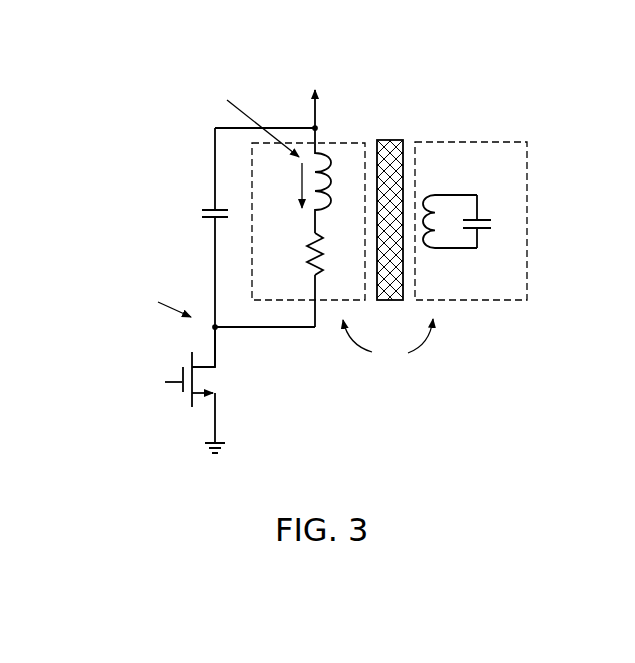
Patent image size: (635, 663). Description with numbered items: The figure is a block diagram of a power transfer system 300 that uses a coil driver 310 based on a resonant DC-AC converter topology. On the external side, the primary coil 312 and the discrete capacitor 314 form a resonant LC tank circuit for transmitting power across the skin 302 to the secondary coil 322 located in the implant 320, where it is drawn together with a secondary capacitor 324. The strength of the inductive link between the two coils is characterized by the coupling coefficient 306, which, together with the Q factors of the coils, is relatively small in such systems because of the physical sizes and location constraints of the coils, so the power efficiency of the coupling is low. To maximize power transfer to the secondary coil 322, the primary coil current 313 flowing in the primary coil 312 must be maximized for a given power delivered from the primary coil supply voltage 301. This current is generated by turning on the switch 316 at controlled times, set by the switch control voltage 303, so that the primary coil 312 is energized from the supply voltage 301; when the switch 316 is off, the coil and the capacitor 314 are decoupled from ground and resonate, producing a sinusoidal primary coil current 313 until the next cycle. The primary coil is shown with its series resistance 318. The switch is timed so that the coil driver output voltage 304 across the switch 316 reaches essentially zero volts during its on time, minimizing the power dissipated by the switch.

The power transfer system 300 is at (525, 89).
The primary coil supply voltage VLP 301 is at (344, 78).
The skin 302 is at (420, 120).
The switch control voltage VSW 303 is at (103, 368).
The coil driver output voltage VL 304 is at (120, 303).
The coupling coefficient KC 306 is at (453, 400).
The coil driver 310 is at (146, 109).
The primary coil LP 312 is at (223, 92).
The primary coil current IL 313 is at (263, 182).
The capacitor CT 314 is at (165, 213).
The switch MS 316 is at (242, 413).
The primary coil resistance RP 318 is at (310, 273).
The implant 320 is at (510, 155).
The secondary coil LS 322 is at (448, 274).
The secondary capacitor CS 324 is at (521, 248).